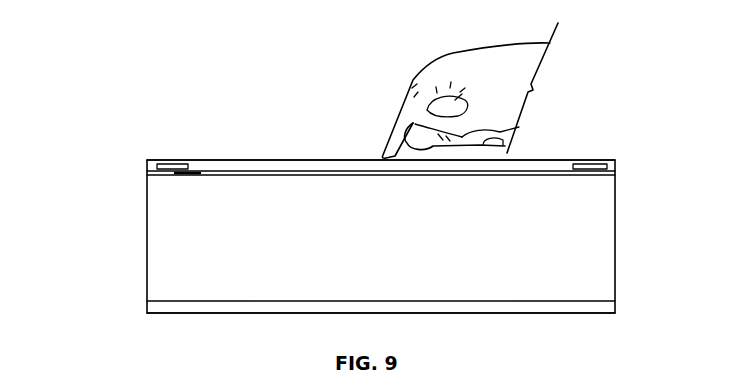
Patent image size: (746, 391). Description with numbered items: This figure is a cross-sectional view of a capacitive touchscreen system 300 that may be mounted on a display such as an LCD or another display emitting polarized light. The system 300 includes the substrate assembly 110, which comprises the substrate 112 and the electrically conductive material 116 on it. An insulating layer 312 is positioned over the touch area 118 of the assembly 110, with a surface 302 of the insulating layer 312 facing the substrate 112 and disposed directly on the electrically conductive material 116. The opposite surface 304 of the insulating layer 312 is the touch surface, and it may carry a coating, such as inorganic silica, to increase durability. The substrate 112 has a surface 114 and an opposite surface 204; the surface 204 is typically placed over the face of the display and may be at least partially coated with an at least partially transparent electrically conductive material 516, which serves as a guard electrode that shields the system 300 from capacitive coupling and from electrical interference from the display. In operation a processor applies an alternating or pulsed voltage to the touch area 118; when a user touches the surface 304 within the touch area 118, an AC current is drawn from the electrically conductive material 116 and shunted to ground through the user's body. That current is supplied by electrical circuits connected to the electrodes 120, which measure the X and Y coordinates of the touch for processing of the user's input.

The capacitive touchscreen system 300 is at (100, 88).
The substrate assembly 110 is at (626, 240).
The substrate 112 is at (400, 275).
The surface 114 is at (183, 173).
The electrically conductive material 116 is at (615, 173).
The touch area 118 is at (361, 171).
The electrodes 120 is at (172, 160).
The surface 304 is at (565, 160).
The insulating layer 312 is at (242, 164).
The surface 302 is at (273, 173).
The surface 204 is at (495, 301).
The electrically conductive material 516 is at (545, 305).